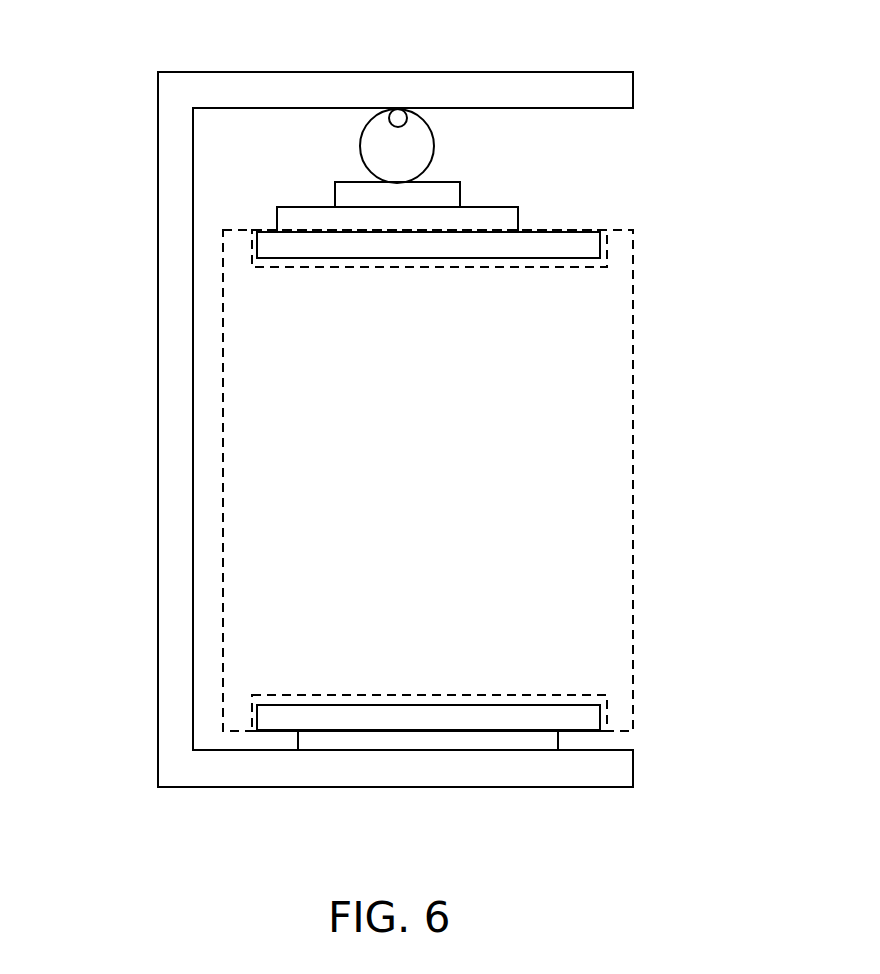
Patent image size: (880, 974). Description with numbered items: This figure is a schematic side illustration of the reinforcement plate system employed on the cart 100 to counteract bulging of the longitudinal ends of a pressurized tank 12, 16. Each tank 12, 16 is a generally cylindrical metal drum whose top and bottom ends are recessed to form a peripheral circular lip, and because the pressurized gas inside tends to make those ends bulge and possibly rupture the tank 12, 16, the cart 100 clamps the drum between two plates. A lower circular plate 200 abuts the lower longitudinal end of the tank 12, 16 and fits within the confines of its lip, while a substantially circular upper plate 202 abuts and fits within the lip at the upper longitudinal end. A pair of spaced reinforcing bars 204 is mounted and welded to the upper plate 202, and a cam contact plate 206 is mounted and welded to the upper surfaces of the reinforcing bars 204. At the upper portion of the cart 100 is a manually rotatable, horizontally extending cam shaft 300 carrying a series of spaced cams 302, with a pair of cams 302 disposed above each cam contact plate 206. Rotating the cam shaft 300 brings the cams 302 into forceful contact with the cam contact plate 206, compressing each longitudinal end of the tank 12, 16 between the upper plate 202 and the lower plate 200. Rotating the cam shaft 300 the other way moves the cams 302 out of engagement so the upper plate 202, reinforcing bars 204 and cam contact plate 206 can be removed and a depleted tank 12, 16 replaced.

The cart 100 is at (143, 607).
The first tank 12 is at (634, 415).
The second tank 16 is at (502, 480).
The lower circular plate 200 is at (575, 727).
The upper plate 202 is at (593, 248).
The reinforcing bars 204 is at (510, 222).
The cam contact plate 206 is at (452, 195).
The cam shaft 300 is at (398, 110).
The cam 302 is at (424, 155).